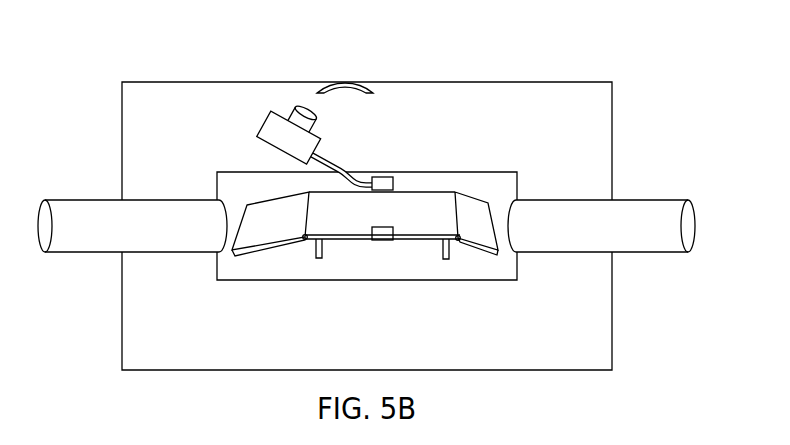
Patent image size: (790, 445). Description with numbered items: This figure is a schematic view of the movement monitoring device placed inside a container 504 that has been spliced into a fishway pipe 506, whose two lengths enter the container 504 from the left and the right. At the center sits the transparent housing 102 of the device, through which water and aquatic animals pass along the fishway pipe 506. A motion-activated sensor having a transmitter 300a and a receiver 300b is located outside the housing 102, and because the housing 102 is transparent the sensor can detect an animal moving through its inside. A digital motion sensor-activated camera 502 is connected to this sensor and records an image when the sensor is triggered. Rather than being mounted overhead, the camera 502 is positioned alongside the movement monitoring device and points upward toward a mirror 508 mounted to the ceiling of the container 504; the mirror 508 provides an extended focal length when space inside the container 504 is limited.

The transparent housing 102 is at (484, 172).
The transmitter 300a is at (388, 183).
The receiver 300b is at (384, 240).
The camera 502 is at (261, 127).
The container 504 is at (613, 137).
The fishway pipe 506 is at (82, 252).
The mirror 508 is at (352, 91).